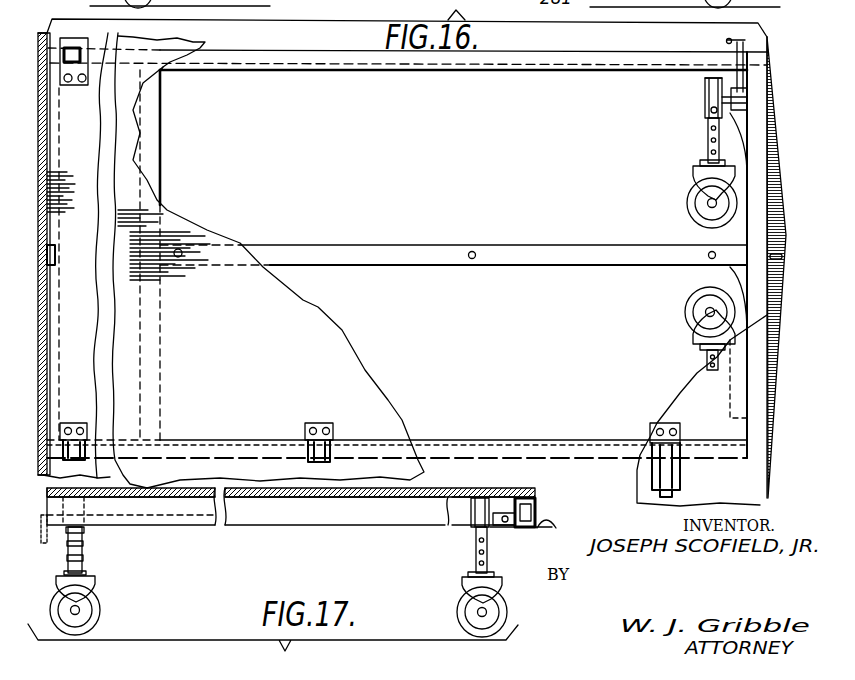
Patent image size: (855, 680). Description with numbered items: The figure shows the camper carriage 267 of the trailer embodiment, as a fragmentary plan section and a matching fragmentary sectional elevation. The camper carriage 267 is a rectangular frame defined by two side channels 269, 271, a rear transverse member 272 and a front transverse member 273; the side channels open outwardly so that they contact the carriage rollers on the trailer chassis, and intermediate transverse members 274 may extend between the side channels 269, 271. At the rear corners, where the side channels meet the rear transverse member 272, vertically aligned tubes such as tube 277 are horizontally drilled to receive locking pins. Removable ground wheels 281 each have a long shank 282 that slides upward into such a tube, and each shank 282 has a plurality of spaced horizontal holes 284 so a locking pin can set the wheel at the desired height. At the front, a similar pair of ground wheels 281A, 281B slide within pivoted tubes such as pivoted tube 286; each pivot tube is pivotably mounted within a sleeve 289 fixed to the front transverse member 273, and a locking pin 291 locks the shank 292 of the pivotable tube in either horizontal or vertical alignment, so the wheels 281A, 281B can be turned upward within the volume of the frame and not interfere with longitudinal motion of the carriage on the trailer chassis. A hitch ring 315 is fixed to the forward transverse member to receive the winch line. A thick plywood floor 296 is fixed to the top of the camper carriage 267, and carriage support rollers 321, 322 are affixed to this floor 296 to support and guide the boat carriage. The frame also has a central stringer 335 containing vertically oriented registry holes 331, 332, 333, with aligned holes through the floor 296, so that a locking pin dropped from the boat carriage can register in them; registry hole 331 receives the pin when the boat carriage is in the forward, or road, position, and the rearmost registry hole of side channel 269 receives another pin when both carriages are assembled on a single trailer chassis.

In FIG. 16, the camper carriage 267 is at (430, 80).
In FIG. 16, the side channel 269 is at (534, 60).
In FIG. 16, the side channel 271 is at (502, 450).
In FIG. 17, the side channel 271 is at (291, 506).
In FIG. 16, the rear transverse member 272 is at (57, 138).
In FIG. 16, the front transverse member 273 is at (758, 122).
In FIG. 16, the intermediate transverse member 274 is at (155, 133).
In FIG. 17, the tube 277 is at (65, 532).
In FIG. 17, the ground wheel 281 is at (102, 612).
In FIG. 16, the ground wheel 281A is at (690, 211).
In FIG. 17, the ground wheel 281A is at (458, 614).
In FIG. 16, the ground wheel 281B is at (690, 318).
In FIG. 17, the shank 282 is at (85, 556).
In FIG. 16, the horizontal holes 284 is at (708, 146).
In FIG. 17, the horizontal holes 284 is at (475, 556).
In FIG. 16, the pivoted tube 286 is at (706, 95).
In FIG. 17, the pivoted tube 286 is at (473, 524).
In FIG. 16, the sleeve 289 is at (748, 98).
In FIG. 16, the locking pin 291 is at (752, 42).
In FIG. 16, the shank 292 is at (725, 91).
In FIG. 16, the floor 296 is at (322, 344).
In FIG. 16, the hitch ring 315 is at (776, 253).
In FIG. 17, the hitch ring 315 is at (540, 522).
In FIG. 16, the carriage support roller 321 is at (72, 442).
In FIG. 16, the carriage support roller 322 is at (72, 86).
In FIG. 16, the registry hole 331 is at (709, 252).
In FIG. 16, the registry hole 332 is at (473, 250).
In FIG. 16, the registry hole 333 is at (186, 250).
In FIG. 16, the central stringer 335 is at (522, 260).